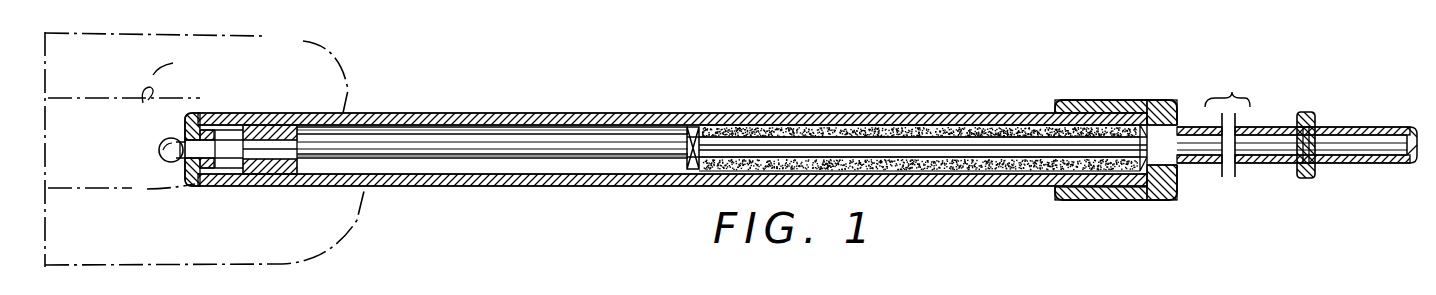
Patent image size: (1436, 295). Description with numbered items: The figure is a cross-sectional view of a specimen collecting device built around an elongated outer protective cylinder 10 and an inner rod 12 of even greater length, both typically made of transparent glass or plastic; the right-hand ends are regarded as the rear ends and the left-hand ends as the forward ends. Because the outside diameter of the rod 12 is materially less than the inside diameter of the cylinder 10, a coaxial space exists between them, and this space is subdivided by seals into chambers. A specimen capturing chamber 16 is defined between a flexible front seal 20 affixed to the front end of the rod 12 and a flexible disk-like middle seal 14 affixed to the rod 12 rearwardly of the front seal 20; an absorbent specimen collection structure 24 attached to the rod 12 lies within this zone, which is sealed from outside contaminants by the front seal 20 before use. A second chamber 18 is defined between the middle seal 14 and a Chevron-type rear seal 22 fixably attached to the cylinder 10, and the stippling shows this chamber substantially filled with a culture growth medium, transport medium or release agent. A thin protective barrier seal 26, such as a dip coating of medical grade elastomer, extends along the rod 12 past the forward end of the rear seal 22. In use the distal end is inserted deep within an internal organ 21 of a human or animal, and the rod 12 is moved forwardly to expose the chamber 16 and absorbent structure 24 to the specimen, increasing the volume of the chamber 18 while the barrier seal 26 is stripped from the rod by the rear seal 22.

The outer protective cylinder 10 is at (785, 113).
The inner rod 12 is at (640, 135).
The middle seal 14 is at (730, 92).
The specimen capturing chamber 16 is at (543, 131).
The second chamber 18 is at (933, 128).
The front seal 20 is at (167, 139).
The internal organ 21 is at (227, 113).
The rear seal 22 is at (1150, 103).
The absorbent specimen collection structure 24 is at (283, 126).
The barrier seal 26 is at (1093, 102).